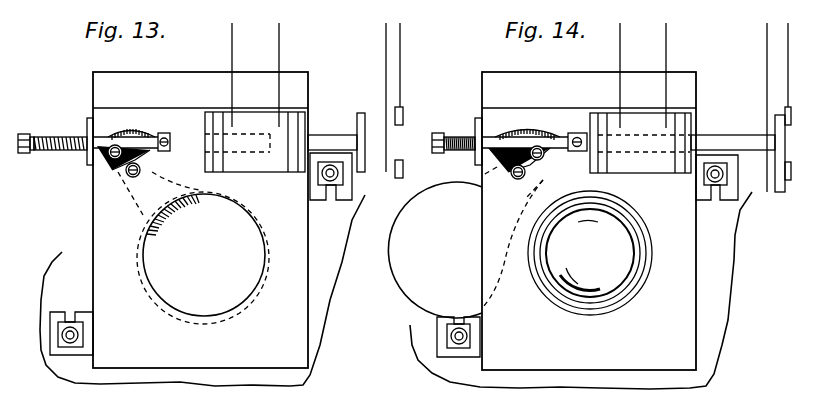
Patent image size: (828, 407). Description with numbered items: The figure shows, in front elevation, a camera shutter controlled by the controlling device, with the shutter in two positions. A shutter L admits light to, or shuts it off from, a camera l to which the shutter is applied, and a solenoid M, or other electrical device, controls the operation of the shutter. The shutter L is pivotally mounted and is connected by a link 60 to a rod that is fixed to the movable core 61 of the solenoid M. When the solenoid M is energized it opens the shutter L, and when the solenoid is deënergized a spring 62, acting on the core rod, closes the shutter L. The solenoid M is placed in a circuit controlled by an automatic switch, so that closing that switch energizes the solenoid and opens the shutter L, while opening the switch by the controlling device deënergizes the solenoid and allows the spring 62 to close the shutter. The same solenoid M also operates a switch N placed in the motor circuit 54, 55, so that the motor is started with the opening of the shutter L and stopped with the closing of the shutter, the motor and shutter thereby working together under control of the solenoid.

In FIG. 13, the spring 62 is at (58, 133).
In FIG. 14, the spring 62 is at (452, 135).
In FIG. 13, the movable core 61 is at (184, 140).
In FIG. 14, the movable core 61 is at (637, 134).
In FIG. 13, the link 60 is at (150, 155).
In FIG. 14, the link 60 is at (548, 152).
In FIG. 13, the motor circuit conductor 54 is at (386, 55).
In FIG. 14, the motor circuit conductor 54 is at (767, 74).
In FIG. 13, the motor circuit conductor 55 is at (402, 52).
In FIG. 14, the motor circuit conductor 55 is at (788, 40).
In FIG. 13, the switch N is at (373, 115).
In FIG. 14, the switch N is at (765, 150).
In FIG. 13, the solenoid M is at (262, 155).
In FIG. 14, the solenoid M is at (645, 160).
In FIG. 13, the shutter L is at (203, 258).
In FIG. 14, the shutter L is at (520, 249).
In FIG. 13, the camera l is at (202, 290).
In FIG. 14, the camera l is at (581, 290).